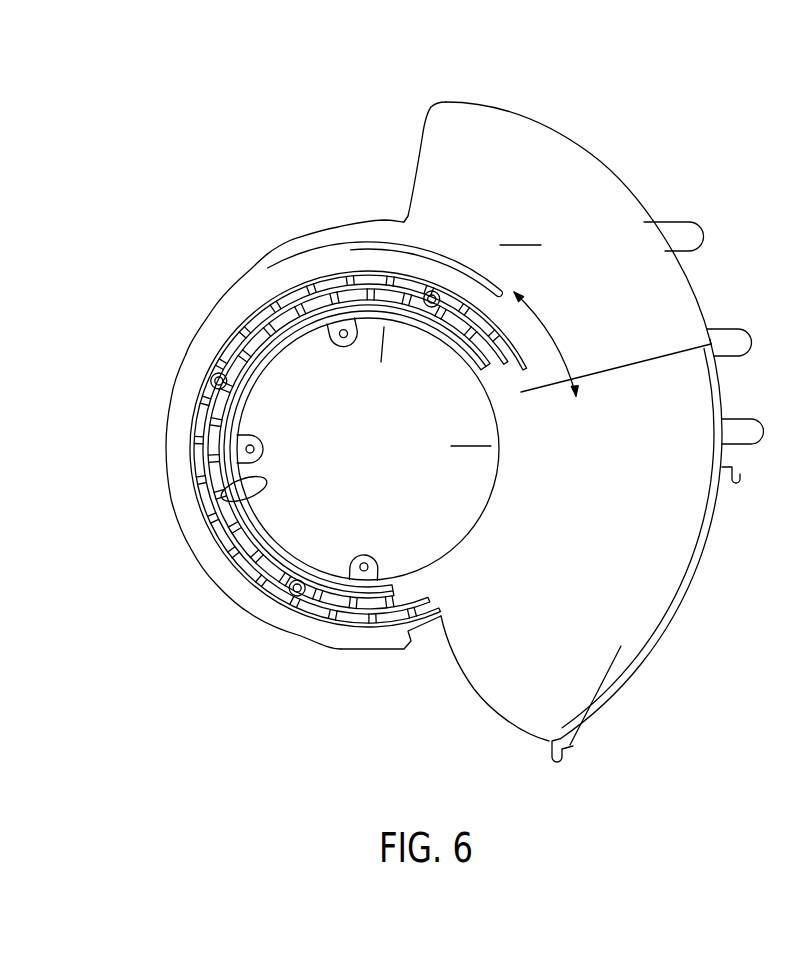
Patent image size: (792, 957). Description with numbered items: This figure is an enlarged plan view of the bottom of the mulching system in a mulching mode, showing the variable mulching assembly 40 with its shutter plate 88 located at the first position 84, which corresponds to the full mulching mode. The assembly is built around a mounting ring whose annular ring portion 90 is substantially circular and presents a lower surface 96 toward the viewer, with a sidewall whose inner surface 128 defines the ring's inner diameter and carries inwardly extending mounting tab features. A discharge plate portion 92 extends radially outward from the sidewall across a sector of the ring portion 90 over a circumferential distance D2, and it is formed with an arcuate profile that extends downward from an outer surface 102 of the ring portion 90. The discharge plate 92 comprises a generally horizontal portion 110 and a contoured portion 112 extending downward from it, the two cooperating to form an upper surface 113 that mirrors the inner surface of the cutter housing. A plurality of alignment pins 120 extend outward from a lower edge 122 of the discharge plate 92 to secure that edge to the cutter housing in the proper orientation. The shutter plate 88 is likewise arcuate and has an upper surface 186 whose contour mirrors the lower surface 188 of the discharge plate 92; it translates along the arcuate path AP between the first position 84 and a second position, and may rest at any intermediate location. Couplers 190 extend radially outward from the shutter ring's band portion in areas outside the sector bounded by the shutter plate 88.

The variable mulching assembly 40 is at (238, 612).
The first position 84 is at (610, 492).
The shutter plate 88 is at (650, 571).
The annular ring portion 90 is at (362, 640).
The discharge plate portion 92 is at (531, 418).
The lower surface 96 is at (178, 452).
The outer surface 102 is at (188, 342).
The horizontal portion 110 is at (440, 270).
The contoured portion 112 is at (513, 750).
The upper surface 113 is at (452, 170).
The alignment pins 120 is at (746, 210).
The lower edge 122 is at (480, 120).
The inner surface 128 is at (243, 503).
The upper surface 186 is at (582, 730).
The lower surface 188 is at (573, 210).
The couplers 190 is at (290, 618).
The arcuate path AP is at (553, 337).
The circumferential distance D2 is at (459, 446).